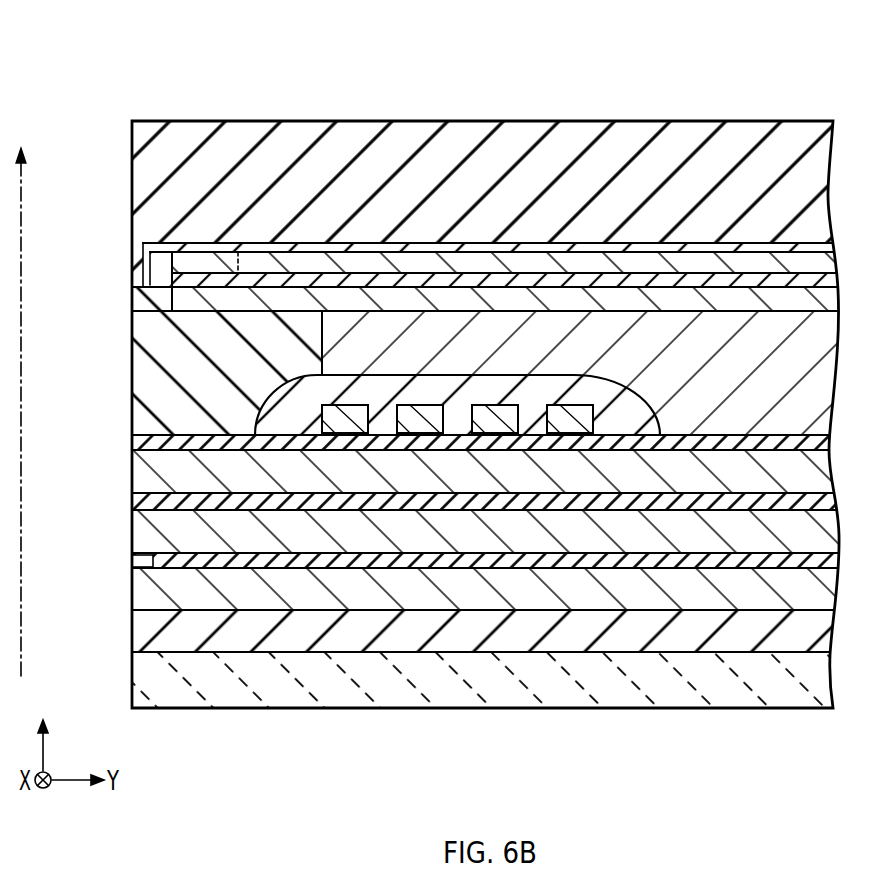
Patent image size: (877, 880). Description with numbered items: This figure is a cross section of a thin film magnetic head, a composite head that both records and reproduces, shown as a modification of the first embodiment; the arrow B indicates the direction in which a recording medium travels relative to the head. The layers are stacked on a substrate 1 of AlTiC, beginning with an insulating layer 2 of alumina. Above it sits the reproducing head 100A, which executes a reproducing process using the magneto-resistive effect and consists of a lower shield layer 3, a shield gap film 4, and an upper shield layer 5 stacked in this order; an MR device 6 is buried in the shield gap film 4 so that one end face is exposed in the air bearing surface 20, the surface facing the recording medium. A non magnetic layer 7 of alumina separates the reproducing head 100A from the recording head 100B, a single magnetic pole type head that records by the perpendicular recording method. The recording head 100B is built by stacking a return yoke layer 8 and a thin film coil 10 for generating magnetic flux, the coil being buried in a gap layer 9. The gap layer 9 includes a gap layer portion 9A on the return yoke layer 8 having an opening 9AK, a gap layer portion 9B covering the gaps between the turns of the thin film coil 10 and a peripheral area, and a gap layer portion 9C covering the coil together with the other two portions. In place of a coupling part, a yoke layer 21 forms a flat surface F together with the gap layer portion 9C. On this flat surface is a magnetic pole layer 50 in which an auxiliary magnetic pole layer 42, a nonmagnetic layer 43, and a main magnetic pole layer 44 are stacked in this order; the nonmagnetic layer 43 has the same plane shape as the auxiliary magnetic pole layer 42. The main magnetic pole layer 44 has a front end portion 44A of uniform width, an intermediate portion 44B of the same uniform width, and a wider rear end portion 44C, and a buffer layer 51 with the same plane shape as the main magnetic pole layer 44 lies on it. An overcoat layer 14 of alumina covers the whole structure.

The substrate 1 is at (795, 691).
The insulating layer 2 is at (737, 632).
The lower shield layer 3 is at (687, 592).
The shield gap film 4 is at (632, 562).
The upper shield layer 5 is at (573, 535).
The MR device 6 is at (142, 572).
The non magnetic layer 7 is at (516, 512).
The return yoke layer 8 is at (462, 475).
The gap layer 9 is at (370, 757).
The gap layer portion 9A is at (350, 417).
The gap layer portion 9B is at (293, 418).
The gap layer portion 9C is at (218, 395).
The opening 9AK is at (666, 446).
The thin film coil 10 is at (420, 418).
The overcoat layer 14 is at (790, 157).
The air bearing surface 20 is at (132, 157).
The yoke layer 21 is at (663, 330).
The auxiliary magnetic pole layer 42 is at (370, 300).
The nonmagnetic layer 43 is at (430, 283).
The main magnetic pole layer 44 is at (333, 63).
The front end portion 44A is at (141, 245).
The intermediate portion 44B is at (222, 258).
The rear end portion 44C is at (288, 258).
The magnetic pole layer 50 is at (481, 243).
The buffer layer 51 is at (550, 250).
The flat surface F is at (593, 309).
The reproducing head 100A is at (127, 507).
The recording head 100B is at (127, 493).
The medium traveling direction B is at (21, 630).